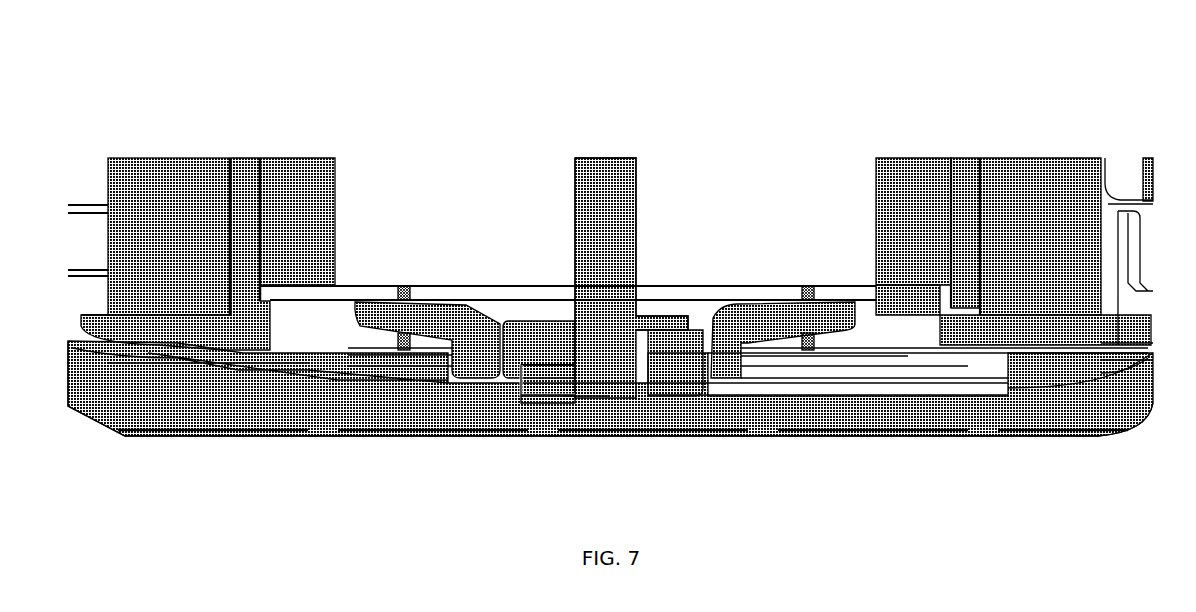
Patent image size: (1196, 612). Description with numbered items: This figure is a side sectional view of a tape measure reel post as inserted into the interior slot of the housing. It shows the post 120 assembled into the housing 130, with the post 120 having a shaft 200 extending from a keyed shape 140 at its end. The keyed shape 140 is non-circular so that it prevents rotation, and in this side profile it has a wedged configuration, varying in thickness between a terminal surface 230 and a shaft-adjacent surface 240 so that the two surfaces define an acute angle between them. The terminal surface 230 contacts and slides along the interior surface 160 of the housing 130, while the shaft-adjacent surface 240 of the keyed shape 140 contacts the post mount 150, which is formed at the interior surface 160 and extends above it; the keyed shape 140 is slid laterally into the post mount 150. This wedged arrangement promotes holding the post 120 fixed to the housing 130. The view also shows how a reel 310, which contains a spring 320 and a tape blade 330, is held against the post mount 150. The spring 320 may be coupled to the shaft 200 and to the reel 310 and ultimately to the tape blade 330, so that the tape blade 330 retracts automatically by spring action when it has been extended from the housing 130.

The post 120 is at (555, 190).
The housing 130 is at (468, 408).
The keyed shape 140 is at (622, 373).
The post mount 150 is at (525, 343).
The interior surface 160 is at (558, 383).
The shaft 200 is at (594, 180).
The terminal surface 230 is at (542, 390).
The shaft-adjacent surface 240 is at (547, 352).
The reel 310 is at (252, 308).
The spring 320 is at (298, 188).
The tape blade 330 is at (178, 205).